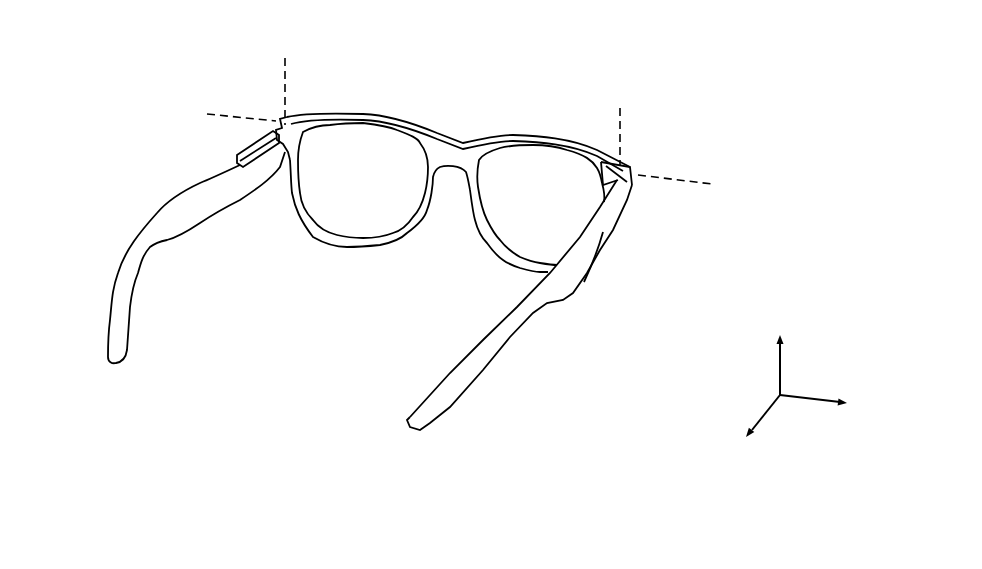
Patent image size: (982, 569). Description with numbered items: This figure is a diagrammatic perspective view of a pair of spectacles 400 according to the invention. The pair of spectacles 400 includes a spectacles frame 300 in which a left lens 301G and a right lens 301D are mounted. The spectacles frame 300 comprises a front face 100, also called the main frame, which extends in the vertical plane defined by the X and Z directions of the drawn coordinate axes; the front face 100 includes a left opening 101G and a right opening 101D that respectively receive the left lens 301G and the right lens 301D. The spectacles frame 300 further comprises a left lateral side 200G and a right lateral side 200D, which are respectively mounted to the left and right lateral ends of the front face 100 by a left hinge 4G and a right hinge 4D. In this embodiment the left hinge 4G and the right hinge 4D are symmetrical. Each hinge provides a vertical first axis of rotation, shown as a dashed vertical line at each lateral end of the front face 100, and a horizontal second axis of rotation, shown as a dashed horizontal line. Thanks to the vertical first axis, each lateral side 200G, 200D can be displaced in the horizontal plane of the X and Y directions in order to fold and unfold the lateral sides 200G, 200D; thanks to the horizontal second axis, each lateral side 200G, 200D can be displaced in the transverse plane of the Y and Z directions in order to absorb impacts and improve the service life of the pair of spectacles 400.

The pair of spectacles 400 is at (545, 52).
The spectacles frame 300 is at (397, 100).
The front face 100 is at (477, 138).
The left opening 101G is at (333, 204).
The right opening 101D is at (503, 205).
The left lens 301G is at (373, 198).
The right lens 301D is at (567, 193).
The left hinge 4G is at (272, 103).
The right hinge 4D is at (643, 147).
The left lateral side 200G is at (181, 193).
The right lateral side 200D is at (551, 287).